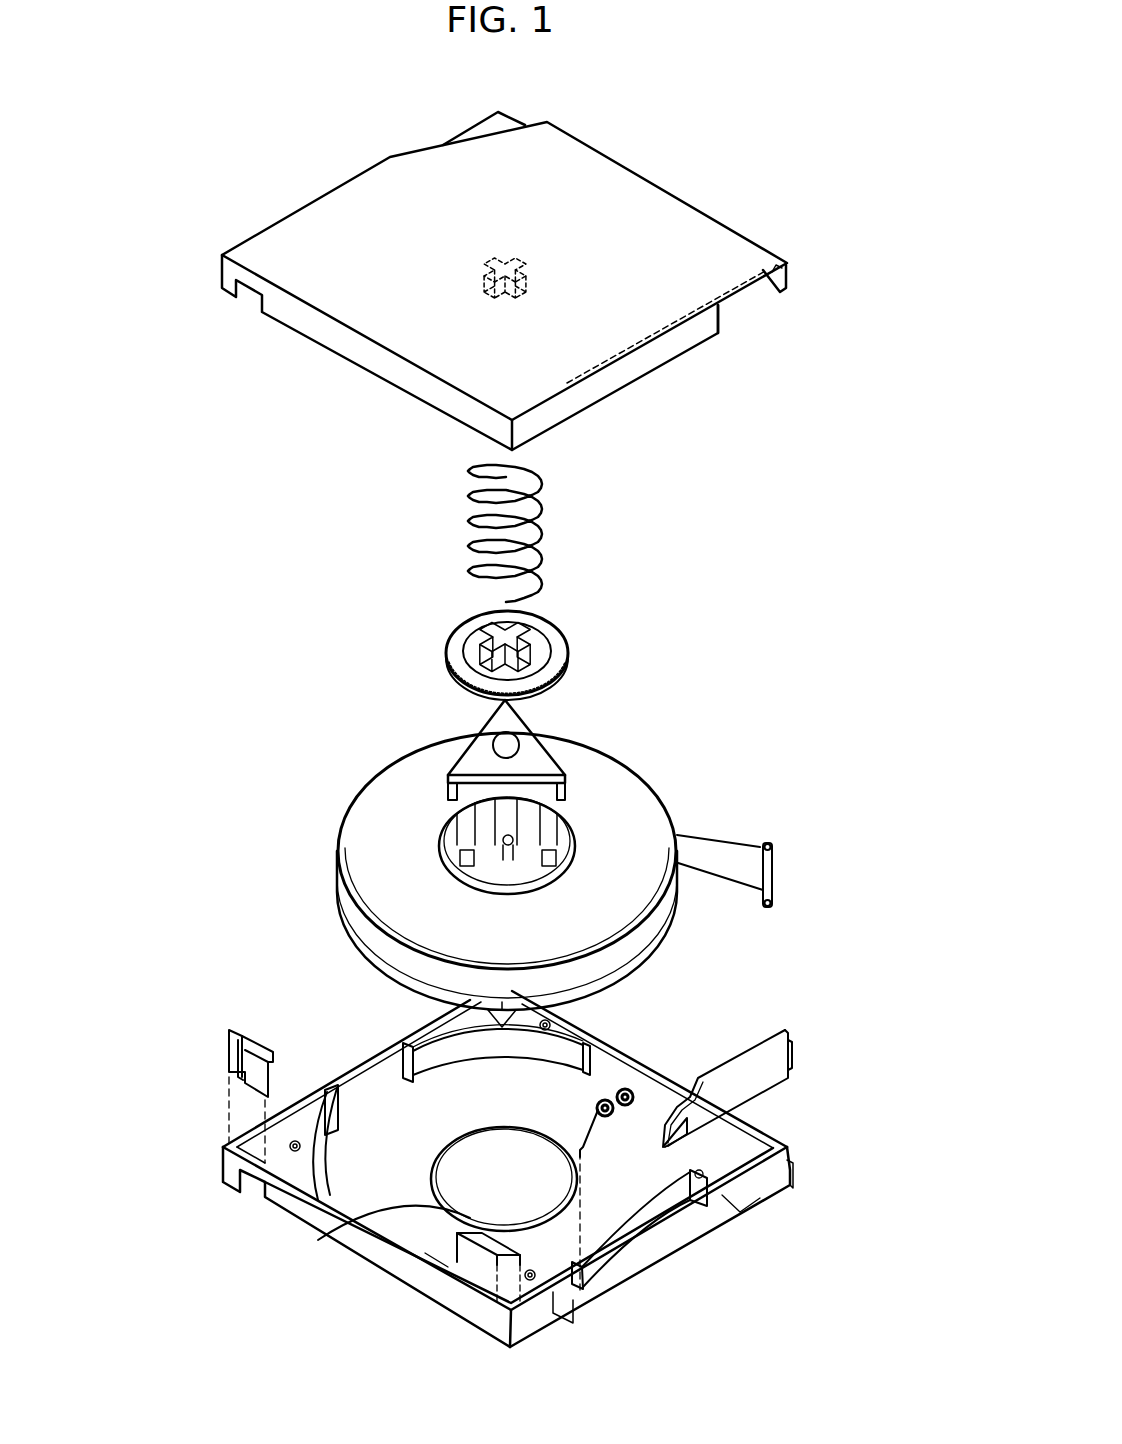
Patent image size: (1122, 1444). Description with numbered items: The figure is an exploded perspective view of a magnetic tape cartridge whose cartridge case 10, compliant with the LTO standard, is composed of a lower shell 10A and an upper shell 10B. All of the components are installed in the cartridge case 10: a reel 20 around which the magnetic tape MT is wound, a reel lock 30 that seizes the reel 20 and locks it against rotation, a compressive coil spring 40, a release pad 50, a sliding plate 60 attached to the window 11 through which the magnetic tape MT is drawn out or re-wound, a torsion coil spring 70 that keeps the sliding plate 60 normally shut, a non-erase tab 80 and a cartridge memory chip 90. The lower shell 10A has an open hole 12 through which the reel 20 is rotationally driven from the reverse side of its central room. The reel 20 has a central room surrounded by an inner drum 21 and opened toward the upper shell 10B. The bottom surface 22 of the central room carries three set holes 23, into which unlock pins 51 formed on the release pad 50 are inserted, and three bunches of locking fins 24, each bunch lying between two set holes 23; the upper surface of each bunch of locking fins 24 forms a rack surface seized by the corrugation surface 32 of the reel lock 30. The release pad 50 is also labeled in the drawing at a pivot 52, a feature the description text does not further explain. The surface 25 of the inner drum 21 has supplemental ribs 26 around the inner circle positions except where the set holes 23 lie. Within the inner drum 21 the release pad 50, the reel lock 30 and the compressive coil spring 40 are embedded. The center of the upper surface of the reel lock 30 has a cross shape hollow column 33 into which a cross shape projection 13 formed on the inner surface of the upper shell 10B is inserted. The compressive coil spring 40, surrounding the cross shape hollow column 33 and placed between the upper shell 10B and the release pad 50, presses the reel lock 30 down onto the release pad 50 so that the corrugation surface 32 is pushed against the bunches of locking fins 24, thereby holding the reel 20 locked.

The cartridge case 10 is at (242, 590).
The lower shell 10A is at (354, 1069).
The upper shell 10B is at (382, 383).
The window 11 is at (720, 313).
The open hole 12 is at (352, 1222).
The cross shape projection 13 is at (527, 247).
The reel 20 is at (647, 758).
The inner drum 21 is at (465, 822).
The bottom surface 22 is at (503, 875).
The set holes 23 is at (540, 815).
The locking fins 24 is at (578, 840).
The surface of the inner drum 25 is at (457, 815).
The supplemental ribs 26 is at (585, 826).
The reel lock 30 is at (560, 616).
The corrugation surface 32 is at (478, 696).
The cross shape hollow column 33 is at (487, 612).
The compressive coil spring 40 is at (542, 530).
The release pad 50 is at (532, 717).
The unlock pins 51 is at (450, 793).
The pivot 52 is at (510, 742).
The sliding plate 60 is at (760, 1040).
The torsion coil spring 70 is at (642, 1088).
The non-erase tab 80 is at (240, 1030).
The cartridge memory chip 90 is at (483, 1245).
The magnetic tape MT is at (760, 850).